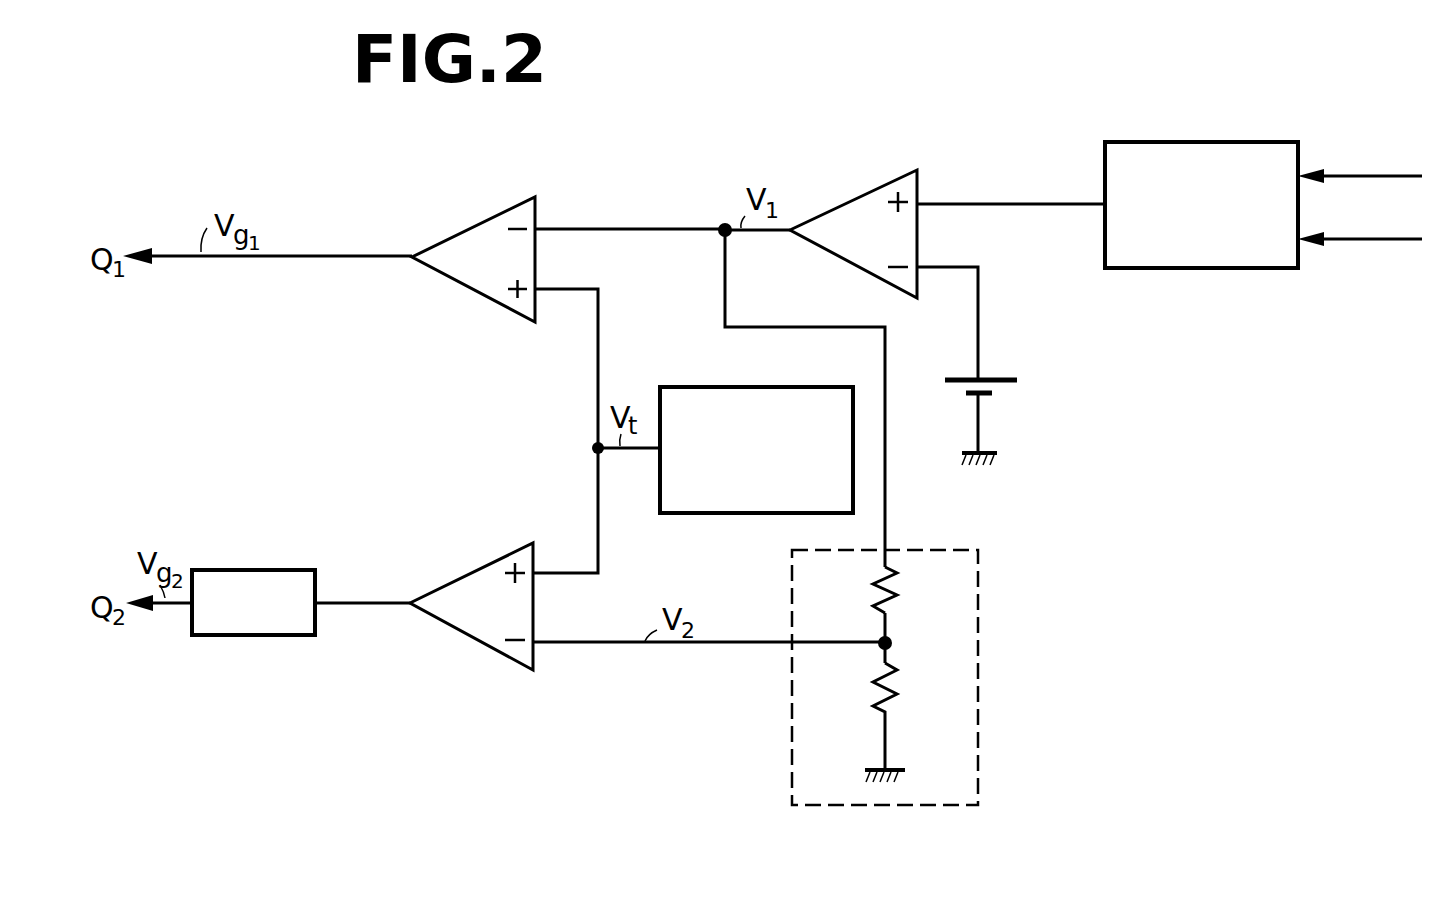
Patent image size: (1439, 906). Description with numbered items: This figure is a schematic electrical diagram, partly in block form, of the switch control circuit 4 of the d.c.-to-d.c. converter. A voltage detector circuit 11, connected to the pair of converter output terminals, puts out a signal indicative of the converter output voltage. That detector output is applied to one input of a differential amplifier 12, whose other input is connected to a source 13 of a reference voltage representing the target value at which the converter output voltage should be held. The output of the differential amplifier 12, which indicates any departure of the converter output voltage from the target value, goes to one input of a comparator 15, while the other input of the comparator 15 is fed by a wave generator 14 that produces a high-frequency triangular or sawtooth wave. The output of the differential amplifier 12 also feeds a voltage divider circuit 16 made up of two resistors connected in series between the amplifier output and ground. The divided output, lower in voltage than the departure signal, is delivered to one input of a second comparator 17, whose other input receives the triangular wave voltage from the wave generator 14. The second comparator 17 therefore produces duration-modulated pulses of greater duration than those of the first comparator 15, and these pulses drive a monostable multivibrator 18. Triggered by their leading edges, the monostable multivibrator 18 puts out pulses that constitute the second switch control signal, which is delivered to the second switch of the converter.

The switch control circuit 4 is at (966, 148).
The voltage detector circuit 11 is at (1199, 142).
The differential amplifier 12 is at (845, 205).
The source of a reference voltage 13 is at (995, 378).
The wave generator 14 is at (754, 387).
The comparator 15 is at (485, 218).
The voltage divider circuit 16 is at (980, 744).
The second comparator 17 is at (449, 578).
The monostable multivibrator 18 is at (252, 570).